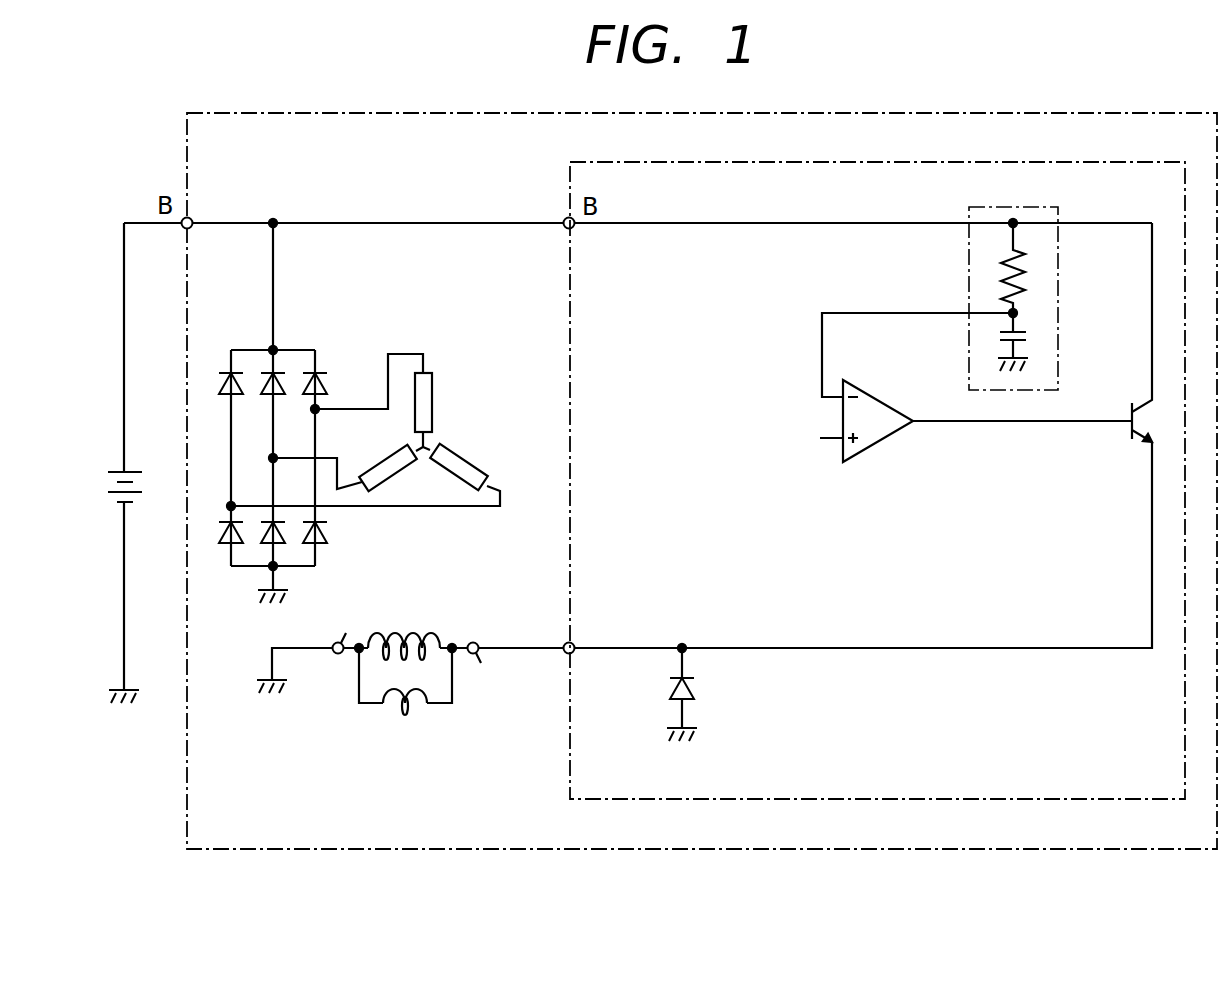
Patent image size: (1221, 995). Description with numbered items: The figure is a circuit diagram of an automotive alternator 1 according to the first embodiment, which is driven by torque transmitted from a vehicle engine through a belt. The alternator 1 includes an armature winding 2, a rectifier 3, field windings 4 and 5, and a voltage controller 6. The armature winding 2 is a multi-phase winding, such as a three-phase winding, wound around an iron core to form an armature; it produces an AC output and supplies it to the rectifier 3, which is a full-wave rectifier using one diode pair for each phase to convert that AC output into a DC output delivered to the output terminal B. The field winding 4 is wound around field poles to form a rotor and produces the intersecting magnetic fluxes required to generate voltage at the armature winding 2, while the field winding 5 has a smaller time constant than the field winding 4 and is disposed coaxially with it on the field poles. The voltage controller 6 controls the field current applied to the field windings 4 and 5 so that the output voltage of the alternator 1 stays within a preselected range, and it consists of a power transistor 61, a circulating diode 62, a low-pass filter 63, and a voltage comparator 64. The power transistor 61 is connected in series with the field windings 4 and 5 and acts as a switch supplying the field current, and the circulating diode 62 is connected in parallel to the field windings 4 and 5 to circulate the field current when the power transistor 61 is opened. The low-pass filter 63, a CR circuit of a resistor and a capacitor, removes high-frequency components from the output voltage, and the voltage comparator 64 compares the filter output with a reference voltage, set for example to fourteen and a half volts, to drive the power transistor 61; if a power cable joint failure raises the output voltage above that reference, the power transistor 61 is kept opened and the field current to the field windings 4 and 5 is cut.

The automotive alternator 1 is at (1135, 113).
The armature winding 2 is at (441, 437).
The rectifier 3 is at (295, 350).
The field winding 4 is at (418, 633).
The field winding 5 is at (398, 715).
The voltage controller 6 is at (1108, 162).
The power transistor 61 is at (1146, 406).
The circulating diode 62 is at (697, 688).
The low-pass filter 63 is at (1059, 292).
The voltage comparator 64 is at (875, 397).